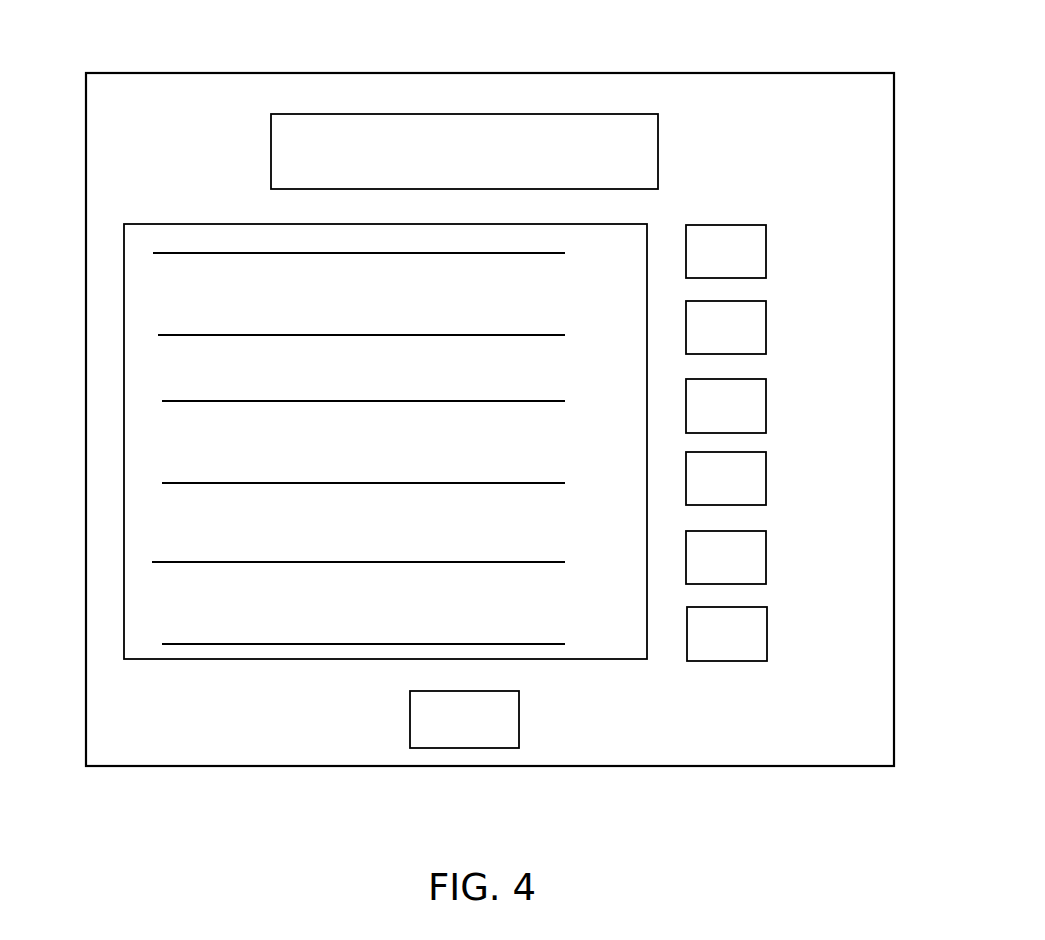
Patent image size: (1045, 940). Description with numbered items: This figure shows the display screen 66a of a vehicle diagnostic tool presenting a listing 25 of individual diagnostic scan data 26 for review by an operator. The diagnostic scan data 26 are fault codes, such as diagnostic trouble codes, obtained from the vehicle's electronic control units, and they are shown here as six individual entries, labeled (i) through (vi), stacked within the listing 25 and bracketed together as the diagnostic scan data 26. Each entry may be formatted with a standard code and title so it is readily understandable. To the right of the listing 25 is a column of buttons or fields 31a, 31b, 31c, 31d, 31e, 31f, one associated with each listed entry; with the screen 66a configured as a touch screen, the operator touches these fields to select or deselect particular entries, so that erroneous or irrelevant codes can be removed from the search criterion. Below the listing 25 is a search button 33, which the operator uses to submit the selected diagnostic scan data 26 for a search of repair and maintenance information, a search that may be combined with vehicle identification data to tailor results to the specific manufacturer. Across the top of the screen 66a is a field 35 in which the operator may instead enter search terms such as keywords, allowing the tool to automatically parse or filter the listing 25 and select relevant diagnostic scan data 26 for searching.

The screen 66a is at (167, 73).
The field 35 is at (549, 128).
The listing 25 is at (337, 523).
The diagnostic scan data 26 is at (93, 458).
The button or field 31a is at (766, 250).
The button or field 31b is at (764, 329).
The button or field 31c is at (765, 409).
The button or field 31d is at (766, 488).
The button or field 31e is at (765, 567).
The button or field 31f is at (766, 640).
The search button 33 is at (519, 725).